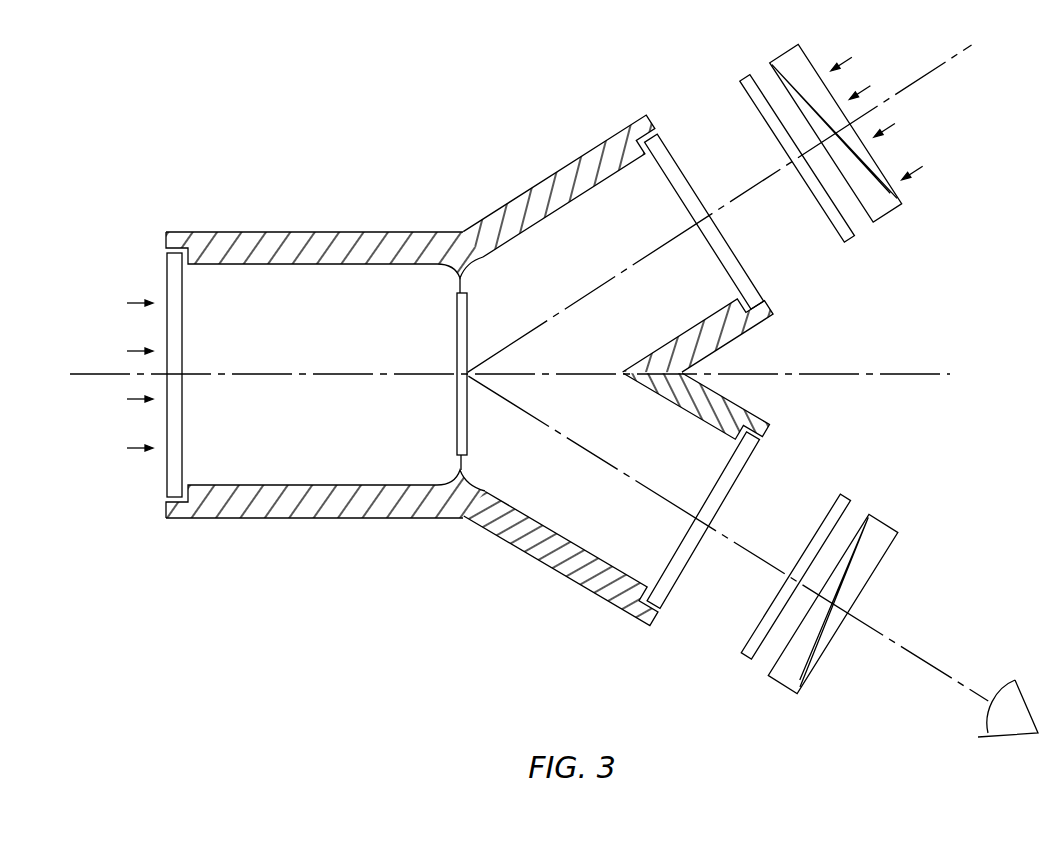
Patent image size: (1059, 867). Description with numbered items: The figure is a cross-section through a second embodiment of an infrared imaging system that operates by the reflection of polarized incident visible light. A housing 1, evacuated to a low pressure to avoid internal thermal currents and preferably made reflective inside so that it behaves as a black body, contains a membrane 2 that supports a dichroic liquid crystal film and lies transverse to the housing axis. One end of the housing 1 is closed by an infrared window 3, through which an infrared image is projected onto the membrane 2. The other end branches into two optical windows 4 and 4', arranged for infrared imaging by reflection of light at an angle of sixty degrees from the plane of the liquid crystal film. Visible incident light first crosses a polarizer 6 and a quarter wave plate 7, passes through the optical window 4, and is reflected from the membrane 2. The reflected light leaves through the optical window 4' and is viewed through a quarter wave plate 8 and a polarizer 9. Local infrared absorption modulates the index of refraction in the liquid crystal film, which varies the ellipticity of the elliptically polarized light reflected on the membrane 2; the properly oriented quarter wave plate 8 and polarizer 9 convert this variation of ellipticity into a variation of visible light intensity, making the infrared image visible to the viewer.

The housing 1 is at (400, 238).
The membrane 2 is at (461, 395).
The infrared window 3 is at (165, 455).
The optical window 4 is at (714, 221).
The optical window 4' is at (711, 520).
The polarizer 6 is at (900, 202).
The quarter wave plate 7 is at (852, 235).
The quarter wave plate 8 is at (831, 511).
The polarizer 9 is at (893, 537).